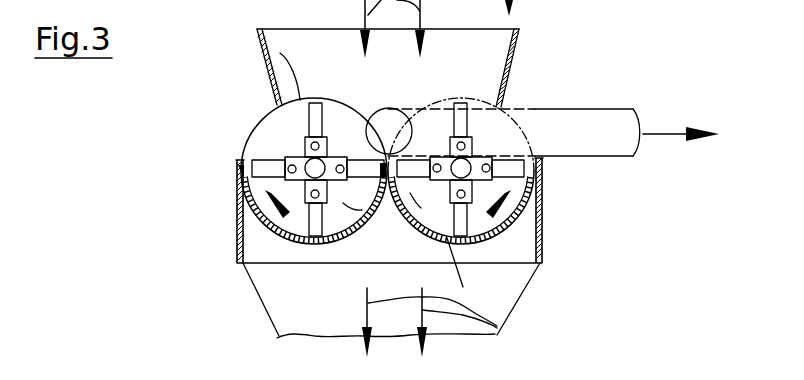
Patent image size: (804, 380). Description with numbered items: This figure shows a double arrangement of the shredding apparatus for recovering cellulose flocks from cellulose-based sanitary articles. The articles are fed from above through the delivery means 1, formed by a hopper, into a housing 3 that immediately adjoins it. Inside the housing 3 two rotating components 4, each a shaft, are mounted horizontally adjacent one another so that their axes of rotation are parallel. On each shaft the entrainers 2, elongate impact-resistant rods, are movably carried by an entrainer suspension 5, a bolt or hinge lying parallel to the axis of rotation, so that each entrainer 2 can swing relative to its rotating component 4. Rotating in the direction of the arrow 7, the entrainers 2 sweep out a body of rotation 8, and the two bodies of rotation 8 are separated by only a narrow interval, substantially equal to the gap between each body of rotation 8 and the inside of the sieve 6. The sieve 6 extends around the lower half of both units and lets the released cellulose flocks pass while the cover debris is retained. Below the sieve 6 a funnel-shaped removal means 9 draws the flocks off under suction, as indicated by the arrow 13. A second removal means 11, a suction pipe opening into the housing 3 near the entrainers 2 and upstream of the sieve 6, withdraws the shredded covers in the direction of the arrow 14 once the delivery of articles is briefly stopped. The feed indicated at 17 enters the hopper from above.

The delivery means 1 is at (475, 52).
The entrainers 2 is at (302, 120).
The housing 3 is at (272, 166).
The rotating component 4 is at (265, 193).
The entrainer suspension 5 is at (290, 172).
The sieve 6 is at (282, 237).
The arrow 7 is at (322, 204).
The body of rotation 8 is at (443, 100).
The removal means 9 is at (302, 302).
The removal means 11 is at (618, 123).
The arrow 13 is at (495, 334).
The arrow 14 is at (672, 136).
The feed material 17 is at (460, 29).